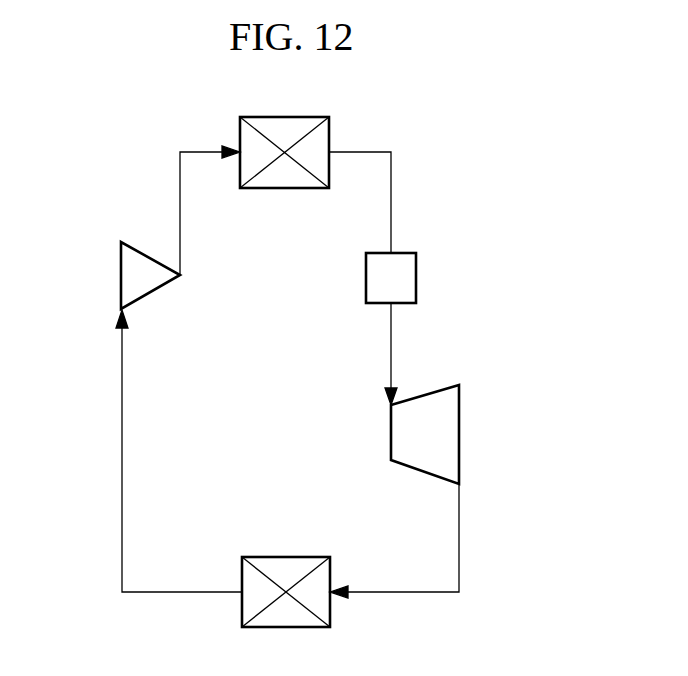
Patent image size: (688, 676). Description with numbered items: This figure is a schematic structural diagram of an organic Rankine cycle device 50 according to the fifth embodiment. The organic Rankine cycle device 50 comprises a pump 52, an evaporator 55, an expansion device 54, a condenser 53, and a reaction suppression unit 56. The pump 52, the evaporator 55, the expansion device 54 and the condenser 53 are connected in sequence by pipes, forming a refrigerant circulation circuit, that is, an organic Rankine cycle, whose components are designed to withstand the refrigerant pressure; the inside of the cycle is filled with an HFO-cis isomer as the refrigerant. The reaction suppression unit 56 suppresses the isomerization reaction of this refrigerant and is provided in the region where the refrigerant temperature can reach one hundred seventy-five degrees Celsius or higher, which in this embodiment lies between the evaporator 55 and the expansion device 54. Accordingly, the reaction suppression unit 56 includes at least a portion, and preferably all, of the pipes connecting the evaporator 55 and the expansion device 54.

The organic Rankine cycle device 50 is at (75, 148).
The pump 52 is at (121, 270).
The condenser 53 is at (283, 556).
The expansion device 54 is at (459, 428).
The evaporator 55 is at (284, 190).
The reaction suppression unit 56 is at (416, 278).